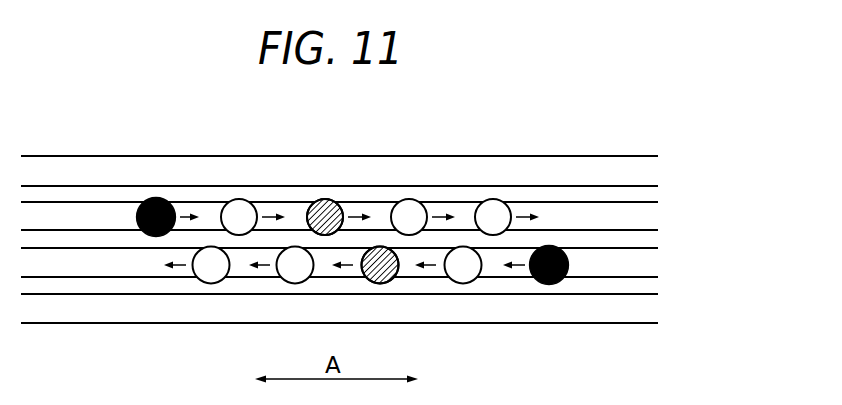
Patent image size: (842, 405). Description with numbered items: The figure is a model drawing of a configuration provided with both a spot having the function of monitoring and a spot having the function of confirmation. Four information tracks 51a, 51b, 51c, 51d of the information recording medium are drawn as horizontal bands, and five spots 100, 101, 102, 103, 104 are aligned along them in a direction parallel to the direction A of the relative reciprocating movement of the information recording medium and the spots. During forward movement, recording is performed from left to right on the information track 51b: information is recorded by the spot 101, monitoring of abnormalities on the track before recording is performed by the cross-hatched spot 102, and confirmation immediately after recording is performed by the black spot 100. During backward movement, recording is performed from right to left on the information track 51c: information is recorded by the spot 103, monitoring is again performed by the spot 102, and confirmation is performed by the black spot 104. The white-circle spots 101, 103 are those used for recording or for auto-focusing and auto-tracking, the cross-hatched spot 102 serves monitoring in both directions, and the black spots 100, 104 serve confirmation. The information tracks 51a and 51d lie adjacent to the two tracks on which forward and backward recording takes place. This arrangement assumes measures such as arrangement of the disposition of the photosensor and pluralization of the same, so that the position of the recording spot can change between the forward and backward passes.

The information track 51a is at (648, 173).
The information track 51b is at (645, 218).
The information track 51c is at (643, 265).
The information track 51d is at (648, 312).
The spot 100 is at (211, 247).
The spot 101 is at (295, 247).
The spot 102 is at (379, 247).
The spot 103 is at (464, 247).
The spot 104 is at (549, 246).